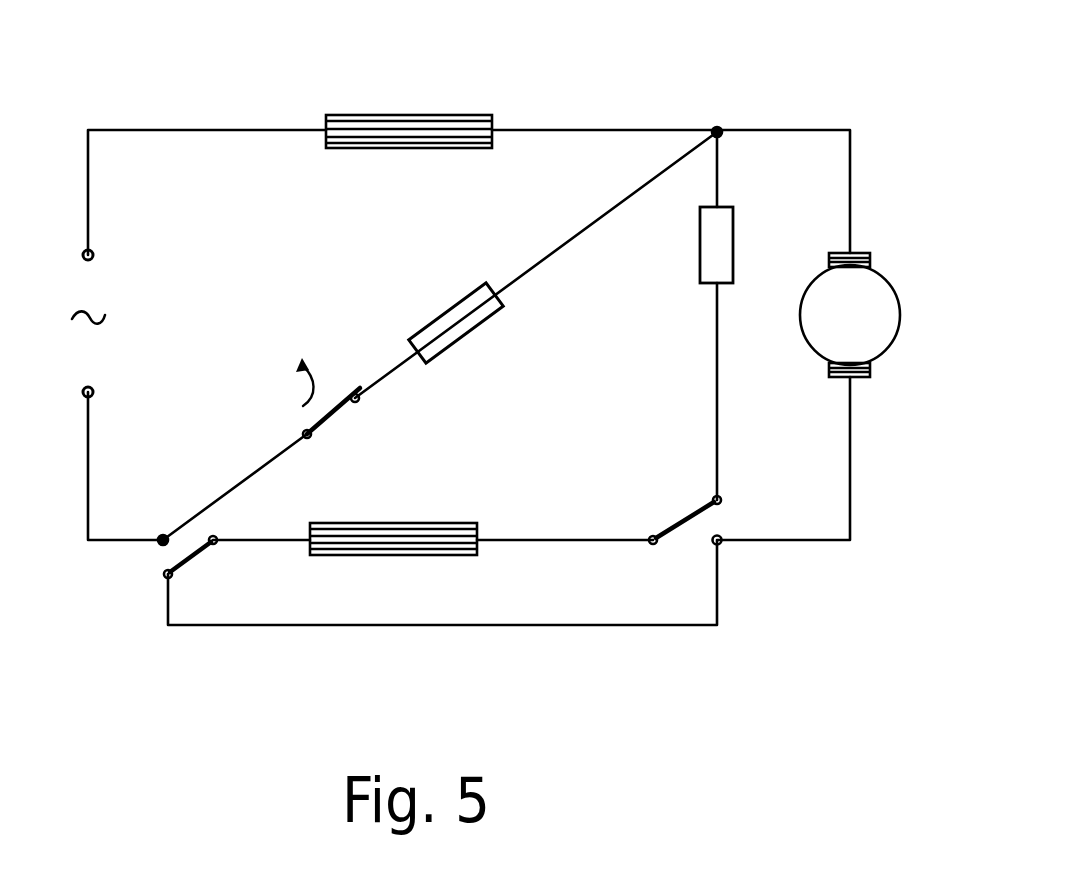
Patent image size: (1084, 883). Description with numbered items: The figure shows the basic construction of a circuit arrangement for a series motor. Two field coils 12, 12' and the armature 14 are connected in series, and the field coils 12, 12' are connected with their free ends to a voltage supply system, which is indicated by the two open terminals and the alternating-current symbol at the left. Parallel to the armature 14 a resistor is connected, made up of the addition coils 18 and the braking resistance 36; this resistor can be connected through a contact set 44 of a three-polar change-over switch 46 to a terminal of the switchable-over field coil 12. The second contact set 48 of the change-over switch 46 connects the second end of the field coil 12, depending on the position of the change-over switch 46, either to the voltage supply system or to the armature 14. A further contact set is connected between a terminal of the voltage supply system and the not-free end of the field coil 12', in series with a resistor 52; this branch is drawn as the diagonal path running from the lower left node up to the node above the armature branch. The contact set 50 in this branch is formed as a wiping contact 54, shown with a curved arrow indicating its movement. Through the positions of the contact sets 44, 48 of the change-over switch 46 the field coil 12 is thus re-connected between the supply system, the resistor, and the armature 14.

The field coil 12' is at (429, 80).
The field coil 12 is at (413, 498).
The armature 14 is at (895, 295).
The addition coils 18 is at (672, 283).
The braking resistance 36 is at (705, 258).
The resistor 52 is at (470, 328).
The contact set 50 is at (330, 410).
The wiping contact 54 is at (318, 386).
The second contact set 48 is at (198, 555).
The contact set 44 is at (685, 518).
The three-polar change-over switch 46 is at (648, 522).